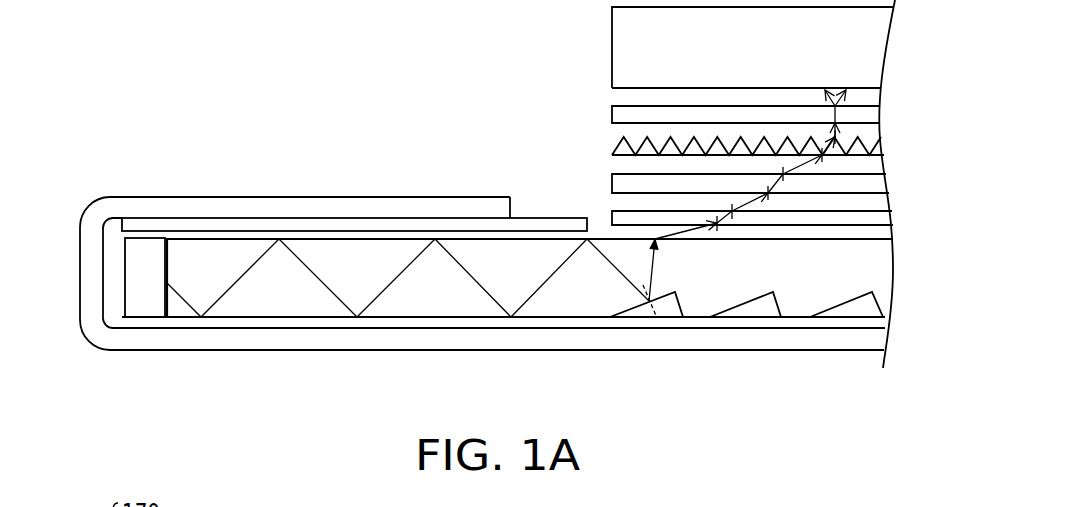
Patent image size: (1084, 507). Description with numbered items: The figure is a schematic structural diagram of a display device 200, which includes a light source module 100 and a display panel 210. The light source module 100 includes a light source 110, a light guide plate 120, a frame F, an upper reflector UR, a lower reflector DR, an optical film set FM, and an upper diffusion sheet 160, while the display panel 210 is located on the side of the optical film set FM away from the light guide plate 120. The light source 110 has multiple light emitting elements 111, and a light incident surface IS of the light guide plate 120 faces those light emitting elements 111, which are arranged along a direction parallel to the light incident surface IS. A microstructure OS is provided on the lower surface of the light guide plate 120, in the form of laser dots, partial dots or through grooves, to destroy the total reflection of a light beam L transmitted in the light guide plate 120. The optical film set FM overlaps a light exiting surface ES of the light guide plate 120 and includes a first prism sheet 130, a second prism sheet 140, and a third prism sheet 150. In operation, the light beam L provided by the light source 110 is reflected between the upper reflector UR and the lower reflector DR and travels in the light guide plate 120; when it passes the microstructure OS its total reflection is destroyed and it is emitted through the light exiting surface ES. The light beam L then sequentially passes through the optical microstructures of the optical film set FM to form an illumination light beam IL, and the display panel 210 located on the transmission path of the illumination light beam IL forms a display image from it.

The light source module 100 is at (272, 134).
The light source 110 is at (116, 280).
The light emitting element 111 is at (143, 253).
The light guide plate 120 is at (877, 274).
The first prism sheet 130 is at (915, 208).
The second prism sheet 140 is at (915, 175).
The third prism sheet 150 is at (913, 140).
The upper diffusion sheet 160 is at (873, 116).
The display device 200 is at (953, 416).
The display panel 210 is at (876, 52).
The optical film set FM is at (388, 3).
The illumination light beam IL is at (848, 100).
The light exiting surface ES is at (875, 237).
The upper reflector UR is at (564, 223).
The lower reflector DR is at (883, 323).
The frame F is at (882, 340).
The light incident surface IS is at (165, 296).
The light beam L is at (241, 278).
The microstructure OS is at (628, 301).